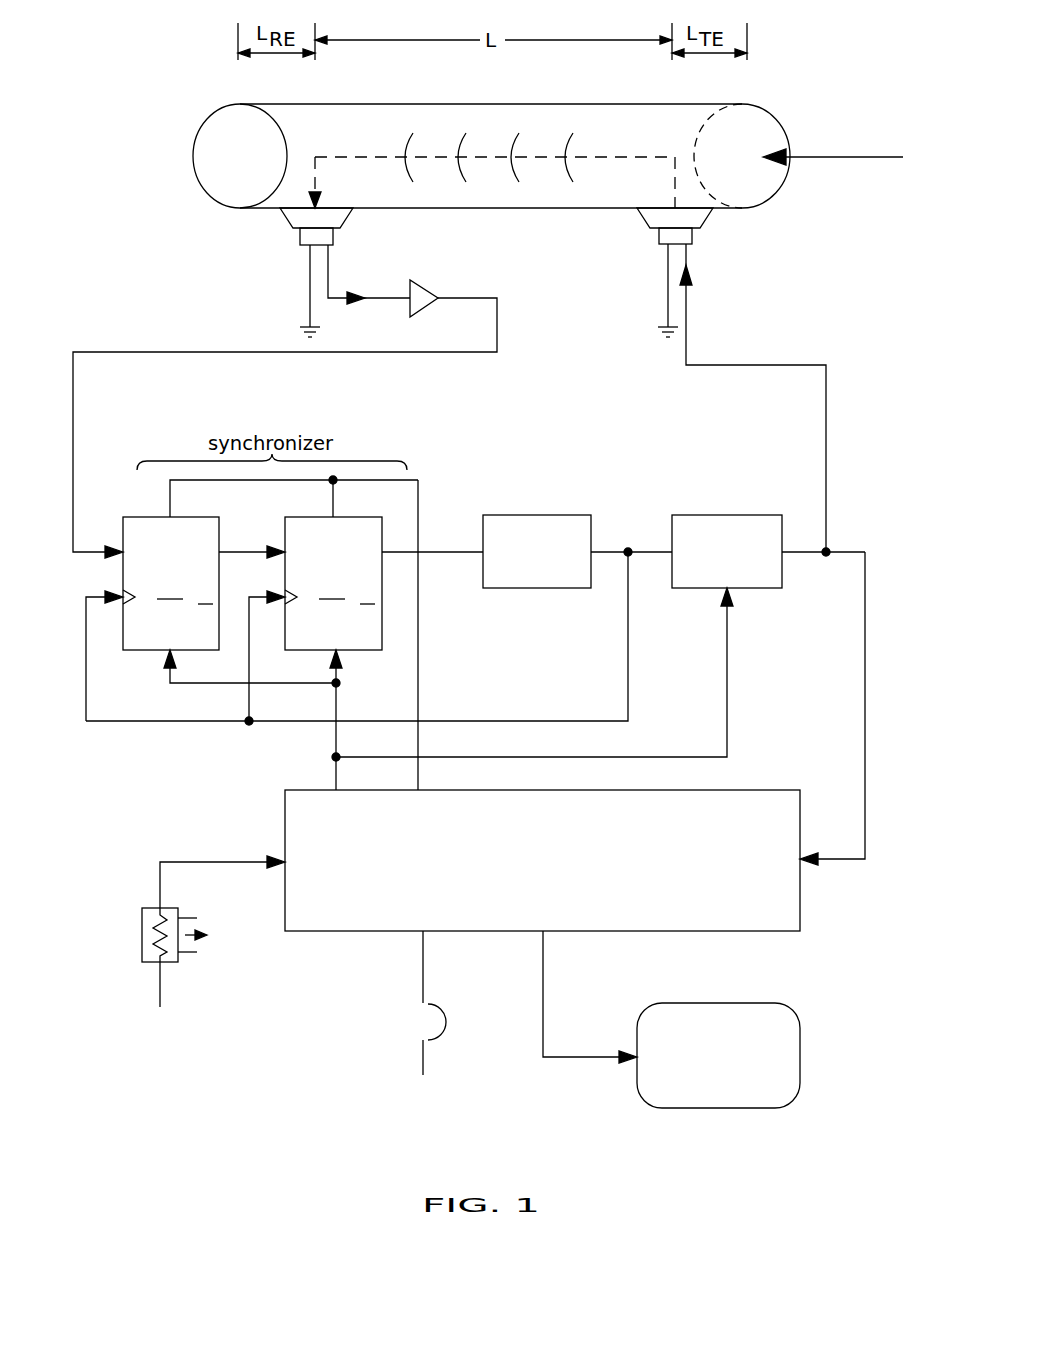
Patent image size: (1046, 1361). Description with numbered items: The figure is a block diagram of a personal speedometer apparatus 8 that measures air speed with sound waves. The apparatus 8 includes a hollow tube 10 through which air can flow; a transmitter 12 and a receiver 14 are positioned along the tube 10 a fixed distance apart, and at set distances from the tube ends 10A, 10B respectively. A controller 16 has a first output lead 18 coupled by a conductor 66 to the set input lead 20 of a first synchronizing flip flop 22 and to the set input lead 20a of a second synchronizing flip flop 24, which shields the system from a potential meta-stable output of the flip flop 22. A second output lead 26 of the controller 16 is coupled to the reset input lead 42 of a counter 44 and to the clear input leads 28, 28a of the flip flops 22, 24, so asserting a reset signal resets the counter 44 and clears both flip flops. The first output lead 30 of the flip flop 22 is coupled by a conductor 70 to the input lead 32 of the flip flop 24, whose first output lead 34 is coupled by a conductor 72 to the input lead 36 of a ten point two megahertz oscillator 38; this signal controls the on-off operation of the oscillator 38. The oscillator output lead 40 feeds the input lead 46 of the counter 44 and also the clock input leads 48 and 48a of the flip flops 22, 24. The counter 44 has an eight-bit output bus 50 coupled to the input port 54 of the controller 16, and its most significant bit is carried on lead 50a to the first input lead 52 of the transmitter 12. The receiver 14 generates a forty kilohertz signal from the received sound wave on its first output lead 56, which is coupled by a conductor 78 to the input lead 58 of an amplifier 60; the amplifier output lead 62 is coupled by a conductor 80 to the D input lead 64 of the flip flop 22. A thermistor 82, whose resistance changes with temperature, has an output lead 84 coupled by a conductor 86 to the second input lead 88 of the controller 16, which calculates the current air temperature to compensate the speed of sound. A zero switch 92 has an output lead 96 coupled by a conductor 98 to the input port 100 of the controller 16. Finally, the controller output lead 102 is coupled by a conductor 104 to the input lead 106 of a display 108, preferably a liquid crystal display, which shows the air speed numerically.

The apparatus 8 is at (163, 52).
The hollow tube 10 is at (517, 146).
The tube end 10A is at (770, 110).
The tube end 10B is at (200, 190).
The transmitter 12 is at (688, 232).
The receiver 14 is at (302, 244).
The controller 16 is at (783, 893).
The first output lead 18 is at (433, 635).
The set input lead 20 is at (251, 498).
The set input lead 20a is at (373, 496).
The first synchronizing flip flop 22 is at (171, 584).
The second synchronizing flip flop 24 is at (333, 584).
The second output lead 26 is at (323, 736).
The clear input lead 28 is at (237, 666).
The clear input lead 28a is at (356, 668).
The first output lead 30 is at (252, 543).
The input lead 32 is at (272, 540).
The first output lead 34 is at (432, 540).
The input lead 36 is at (469, 570).
The oscillator 38 is at (567, 520).
The output lead 40 is at (631, 543).
The reset input lead 42 is at (546, 674).
The counter 44 is at (710, 520).
The input lead 46 is at (657, 543).
The input lead 48 is at (104, 644).
The input lead 48a is at (265, 646).
The output bus 50 is at (823, 543).
The lead 50a is at (828, 465).
The first input lead 52 is at (753, 398).
The input port 54 is at (832, 708).
The first output lead 56 is at (369, 274).
The input lead 58 is at (394, 288).
The amplifier 60 is at (428, 307).
The output lead 62 is at (457, 288).
The D input lead 64 is at (109, 536).
The conductor 66 is at (419, 703).
The conductor 70 is at (253, 548).
The conductor 72 is at (424, 548).
The conductor 78 is at (376, 302).
The conductor 80 is at (497, 327).
The thermistor 82 is at (142, 937).
The output lead 84 is at (147, 896).
The conductor 86 is at (195, 858).
The second input lead 88 is at (270, 848).
The zero switch 92 is at (446, 1025).
The output lead 96 is at (439, 991).
The conductor 98 is at (423, 967).
The input port 100 is at (446, 967).
The output lead 102 is at (590, 997).
The conductor 104 is at (548, 985).
The input lead 106 is at (617, 1076).
The display 108 is at (780, 1020).